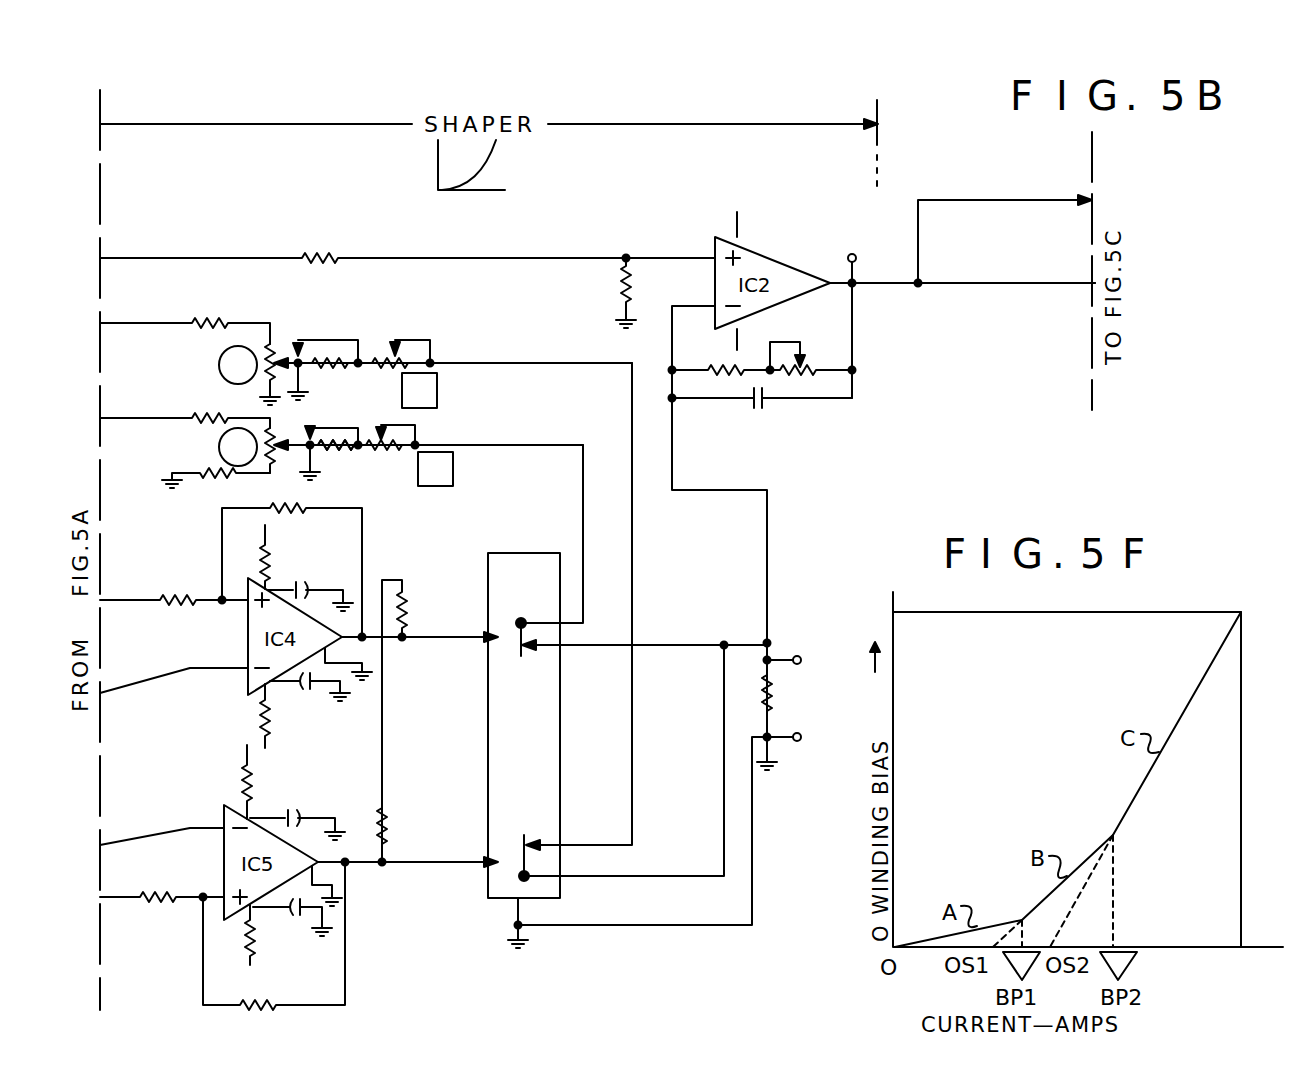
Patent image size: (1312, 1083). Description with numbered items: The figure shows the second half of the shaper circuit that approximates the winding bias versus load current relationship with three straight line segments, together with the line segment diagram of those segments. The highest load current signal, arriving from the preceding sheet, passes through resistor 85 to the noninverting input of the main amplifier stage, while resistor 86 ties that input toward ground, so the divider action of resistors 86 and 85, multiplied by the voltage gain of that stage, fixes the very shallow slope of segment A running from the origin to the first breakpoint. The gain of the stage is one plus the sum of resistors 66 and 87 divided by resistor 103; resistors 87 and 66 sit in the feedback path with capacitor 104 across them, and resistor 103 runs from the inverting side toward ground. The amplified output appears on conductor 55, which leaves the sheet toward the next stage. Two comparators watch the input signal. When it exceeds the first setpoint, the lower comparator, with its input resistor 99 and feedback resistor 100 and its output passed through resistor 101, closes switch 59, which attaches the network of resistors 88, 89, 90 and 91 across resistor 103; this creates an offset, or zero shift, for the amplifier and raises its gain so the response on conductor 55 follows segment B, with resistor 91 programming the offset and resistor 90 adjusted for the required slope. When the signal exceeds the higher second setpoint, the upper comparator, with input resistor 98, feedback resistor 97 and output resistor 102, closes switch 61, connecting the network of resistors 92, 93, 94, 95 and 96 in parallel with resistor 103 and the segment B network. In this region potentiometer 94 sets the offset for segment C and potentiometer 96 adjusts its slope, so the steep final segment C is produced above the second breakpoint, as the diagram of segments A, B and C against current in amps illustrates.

The conductor 55 is at (1011, 286).
The switch 59 is at (523, 838).
The switch 61 is at (526, 662).
The resistor 66 is at (791, 342).
The resistor 85 is at (319, 256).
The resistor 86 is at (641, 300).
The resistor 87 is at (738, 366).
The resistor 88 is at (206, 320).
The resistor 89 is at (323, 358).
The resistor 90 is at (413, 358).
The resistor 91 is at (273, 358).
The resistor 92 is at (209, 412).
The resistor 93 is at (216, 484).
The potentiometer 94 is at (331, 437).
The resistor 95 is at (326, 452).
The potentiometer 96 is at (384, 450).
The feedback resistor 97 is at (284, 514).
The input resistor 98 is at (173, 608).
The input resistor 99 is at (179, 894).
The feedback resistor 100 is at (266, 1010).
The resistor 101 is at (393, 836).
The resistor 102 is at (407, 612).
The resistor 103 is at (786, 712).
The capacitor 104 is at (767, 400).